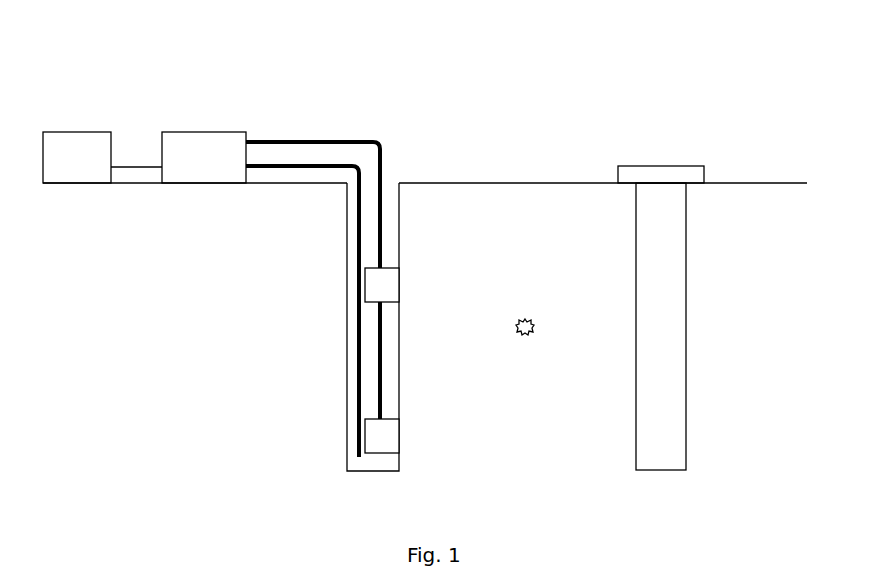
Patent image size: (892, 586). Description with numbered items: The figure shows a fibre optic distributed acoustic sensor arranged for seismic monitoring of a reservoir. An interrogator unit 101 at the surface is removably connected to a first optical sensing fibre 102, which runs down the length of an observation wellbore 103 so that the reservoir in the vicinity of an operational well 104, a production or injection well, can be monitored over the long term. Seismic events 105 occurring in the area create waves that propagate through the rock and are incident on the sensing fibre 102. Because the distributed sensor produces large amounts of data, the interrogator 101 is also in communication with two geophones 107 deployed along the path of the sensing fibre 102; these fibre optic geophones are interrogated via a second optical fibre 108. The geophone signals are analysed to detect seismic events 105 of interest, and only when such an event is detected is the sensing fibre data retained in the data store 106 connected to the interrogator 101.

The interrogator unit 101 is at (204, 157).
The first optical sensing fibre 102 is at (363, 370).
The observation wellbore 103 is at (403, 216).
The operational well 104 is at (688, 418).
The seismic event 105 is at (537, 315).
The data store 106 is at (102, 157).
The geophones 107 is at (399, 287).
The second optical fibre 108 is at (384, 147).